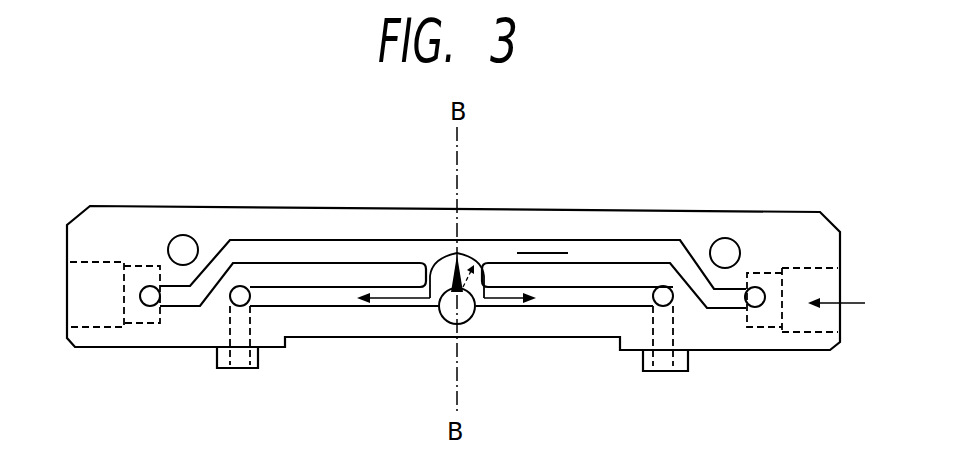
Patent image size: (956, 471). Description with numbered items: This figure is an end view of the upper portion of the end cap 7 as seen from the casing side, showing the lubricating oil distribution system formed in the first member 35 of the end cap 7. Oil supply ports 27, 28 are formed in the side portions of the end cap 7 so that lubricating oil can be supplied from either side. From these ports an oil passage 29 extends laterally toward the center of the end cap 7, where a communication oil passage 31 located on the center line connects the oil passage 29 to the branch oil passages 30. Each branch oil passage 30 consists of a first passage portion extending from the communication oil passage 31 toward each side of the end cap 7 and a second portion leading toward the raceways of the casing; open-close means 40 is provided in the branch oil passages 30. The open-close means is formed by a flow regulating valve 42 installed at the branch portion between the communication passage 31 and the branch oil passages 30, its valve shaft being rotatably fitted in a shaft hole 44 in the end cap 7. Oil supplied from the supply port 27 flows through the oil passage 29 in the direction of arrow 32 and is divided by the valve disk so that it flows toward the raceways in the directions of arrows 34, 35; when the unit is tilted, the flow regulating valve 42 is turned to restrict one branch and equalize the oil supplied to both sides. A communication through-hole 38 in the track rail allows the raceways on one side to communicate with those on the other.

The end cap 7 is at (796, 209).
The oil supply port 27 is at (805, 328).
The oil supply port 28 is at (95, 258).
The oil passage 29 is at (263, 252).
The branch oil passage 30 is at (318, 300).
The communication oil passage 31 is at (427, 257).
The arrow 32 is at (543, 253).
The arrow 34 is at (408, 301).
The first member 35 is at (508, 300).
The communication through-hole 38 is at (460, 254).
The open-close means 40 is at (443, 318).
The flow regulating valve 42 is at (470, 322).
The shaft hole 44 is at (228, 360).